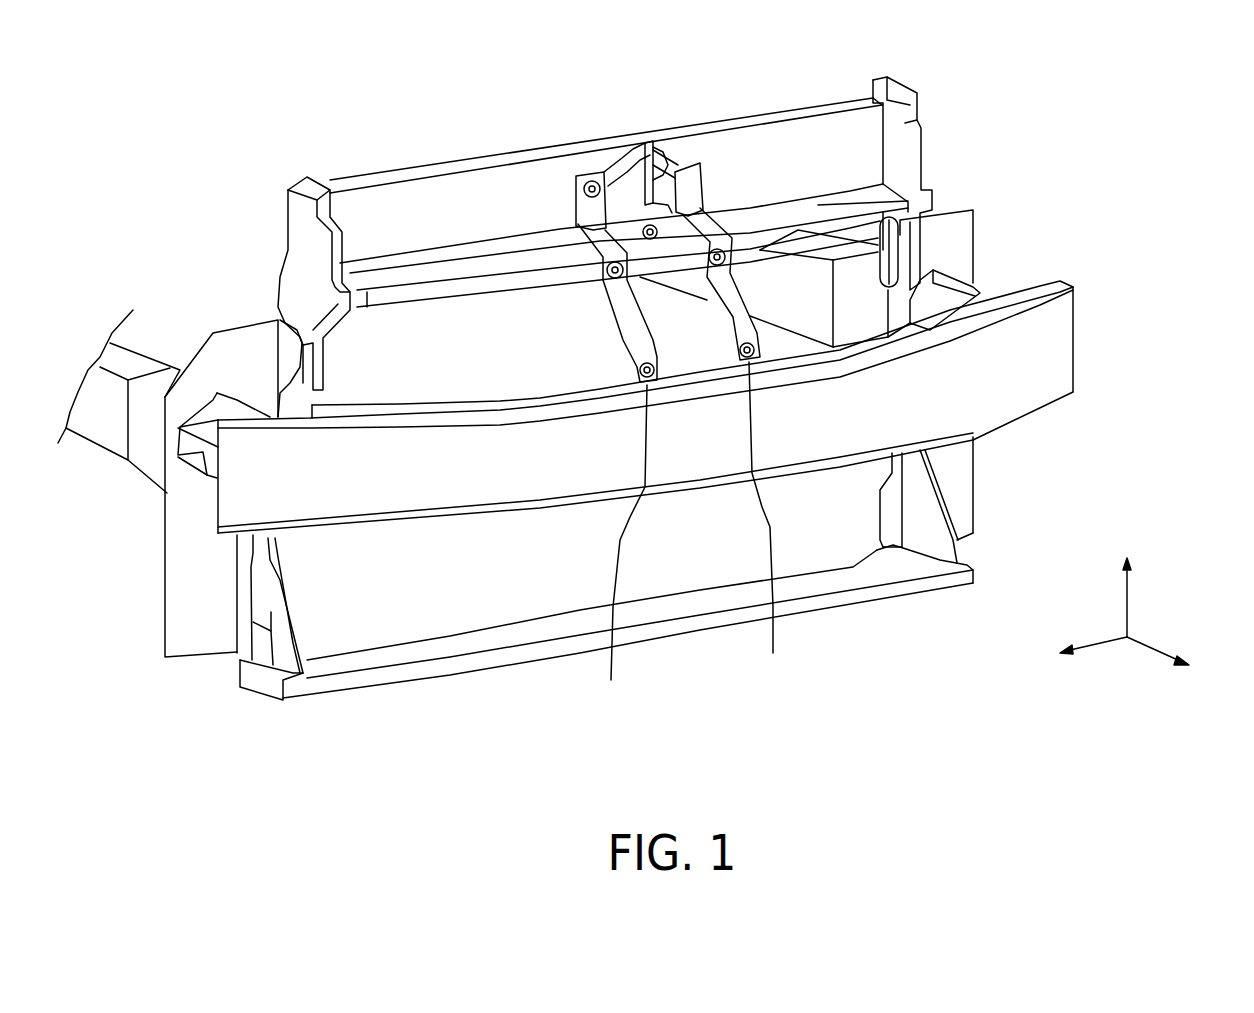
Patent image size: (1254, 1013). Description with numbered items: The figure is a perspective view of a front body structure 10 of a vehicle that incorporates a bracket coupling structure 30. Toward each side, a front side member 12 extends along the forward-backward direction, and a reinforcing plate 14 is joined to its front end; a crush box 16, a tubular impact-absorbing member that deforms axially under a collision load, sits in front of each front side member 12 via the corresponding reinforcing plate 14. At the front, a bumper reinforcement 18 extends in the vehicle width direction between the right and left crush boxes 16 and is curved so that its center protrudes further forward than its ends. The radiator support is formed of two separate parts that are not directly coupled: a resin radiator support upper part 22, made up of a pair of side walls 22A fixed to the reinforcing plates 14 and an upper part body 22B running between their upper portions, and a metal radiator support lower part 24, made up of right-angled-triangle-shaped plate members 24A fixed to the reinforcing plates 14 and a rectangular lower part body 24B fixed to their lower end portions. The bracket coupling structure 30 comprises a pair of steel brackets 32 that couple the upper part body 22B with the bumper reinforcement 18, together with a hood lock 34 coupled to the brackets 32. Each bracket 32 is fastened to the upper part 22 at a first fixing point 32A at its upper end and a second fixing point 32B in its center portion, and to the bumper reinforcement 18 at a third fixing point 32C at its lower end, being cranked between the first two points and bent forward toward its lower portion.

The front body structure 10 is at (218, 83).
The front side member 12 is at (985, 165).
The reinforcing plate 14 is at (582, 416).
The crush box 16 is at (593, 347).
The bumper reinforcement 18 is at (615, 413).
The radiator support upper part 22 is at (348, 160).
The side wall 22A is at (617, 233).
The upper part body 22B is at (619, 171).
The radiator support lower part 24 is at (613, 599).
The plate member 24A is at (613, 581).
The lower part body 24B is at (628, 633).
The bracket coupling structure 30 is at (649, 375).
The bracket 32 is at (610, 173).
The first fixing point 32A is at (623, 145).
The second fixing point 32B is at (639, 226).
The third fixing point 32C is at (691, 536).
The hood lock 34 is at (654, 161).